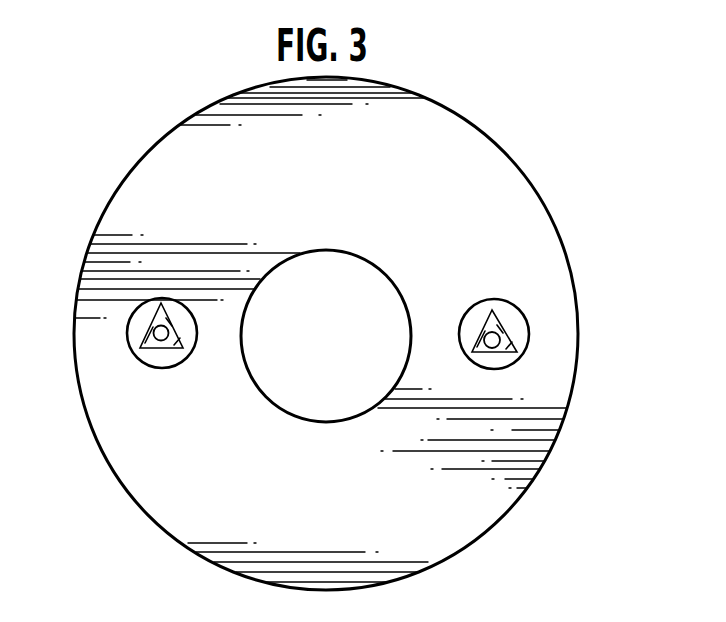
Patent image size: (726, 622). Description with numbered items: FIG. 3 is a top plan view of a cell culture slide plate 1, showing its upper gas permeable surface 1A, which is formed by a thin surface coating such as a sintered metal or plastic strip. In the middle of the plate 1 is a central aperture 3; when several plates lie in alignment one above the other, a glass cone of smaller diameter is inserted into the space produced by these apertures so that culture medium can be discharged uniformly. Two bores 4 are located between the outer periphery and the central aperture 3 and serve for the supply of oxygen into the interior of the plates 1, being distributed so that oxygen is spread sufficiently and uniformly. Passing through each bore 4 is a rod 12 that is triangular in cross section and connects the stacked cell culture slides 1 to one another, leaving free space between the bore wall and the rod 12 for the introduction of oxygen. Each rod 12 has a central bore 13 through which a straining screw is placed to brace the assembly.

The cell culture slide plate 1 is at (126, 508).
The gas permeable surface 1A is at (298, 177).
The central aperture 3 is at (362, 275).
The bores 4 is at (155, 357).
The rod 12 is at (157, 318).
The central bore 13 is at (152, 334).